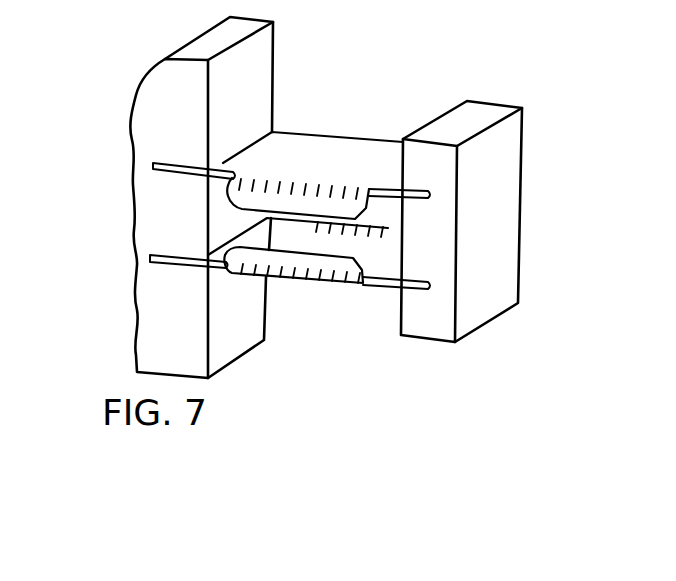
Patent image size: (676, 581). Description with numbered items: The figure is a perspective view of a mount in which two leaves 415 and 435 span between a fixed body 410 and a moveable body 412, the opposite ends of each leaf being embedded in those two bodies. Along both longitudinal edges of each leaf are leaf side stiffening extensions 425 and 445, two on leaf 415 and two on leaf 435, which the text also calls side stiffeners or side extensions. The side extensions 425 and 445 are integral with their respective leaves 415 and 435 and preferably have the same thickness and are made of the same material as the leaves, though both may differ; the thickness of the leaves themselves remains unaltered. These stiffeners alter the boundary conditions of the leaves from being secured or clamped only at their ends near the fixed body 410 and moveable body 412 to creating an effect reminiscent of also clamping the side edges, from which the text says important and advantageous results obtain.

The fixed body 410 is at (193, 321).
The moveable body 412 is at (512, 234).
The leaf 415 is at (377, 178).
The leaf 435 is at (395, 253).
The leaf side stiffening extensions 425 is at (262, 202).
The leaf side stiffening extensions 445 is at (305, 224).